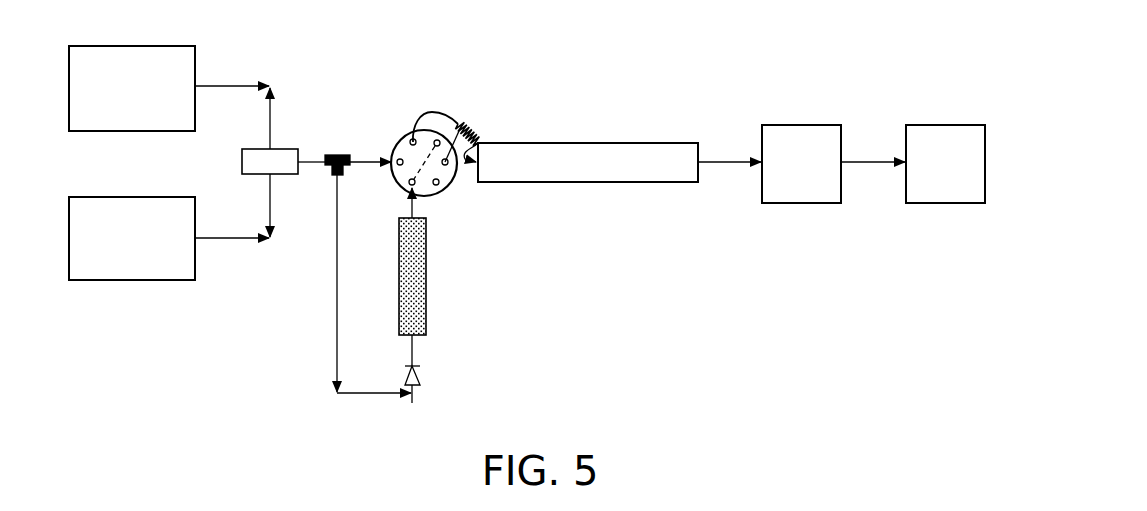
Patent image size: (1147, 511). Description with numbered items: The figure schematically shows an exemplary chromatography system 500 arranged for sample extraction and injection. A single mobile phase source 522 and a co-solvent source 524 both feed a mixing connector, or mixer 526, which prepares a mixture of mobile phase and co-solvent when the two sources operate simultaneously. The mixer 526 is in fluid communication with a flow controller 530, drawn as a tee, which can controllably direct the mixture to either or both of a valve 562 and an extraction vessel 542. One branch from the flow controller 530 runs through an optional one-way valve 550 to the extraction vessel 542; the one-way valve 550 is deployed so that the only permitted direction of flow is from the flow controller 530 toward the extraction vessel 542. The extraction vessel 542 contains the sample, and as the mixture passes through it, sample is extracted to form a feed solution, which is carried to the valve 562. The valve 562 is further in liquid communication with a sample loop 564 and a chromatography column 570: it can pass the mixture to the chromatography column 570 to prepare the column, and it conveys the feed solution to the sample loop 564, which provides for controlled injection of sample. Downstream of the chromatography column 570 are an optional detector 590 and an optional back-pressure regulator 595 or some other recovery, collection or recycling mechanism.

The chromatography system 500 is at (569, 92).
The mobile phase source 522 is at (169, 97).
The co-solvent source 524 is at (169, 227).
The mixing connector 526 is at (283, 162).
The flow controller 530 is at (326, 153).
The extraction vessel 542 is at (443, 281).
The one-way valve 550 is at (426, 382).
The valve 562 is at (391, 129).
The sample loop 564 is at (471, 120).
The chromatography column 570 is at (619, 162).
The detector 590 is at (833, 164).
The back-pressure regulator 595 is at (945, 164).